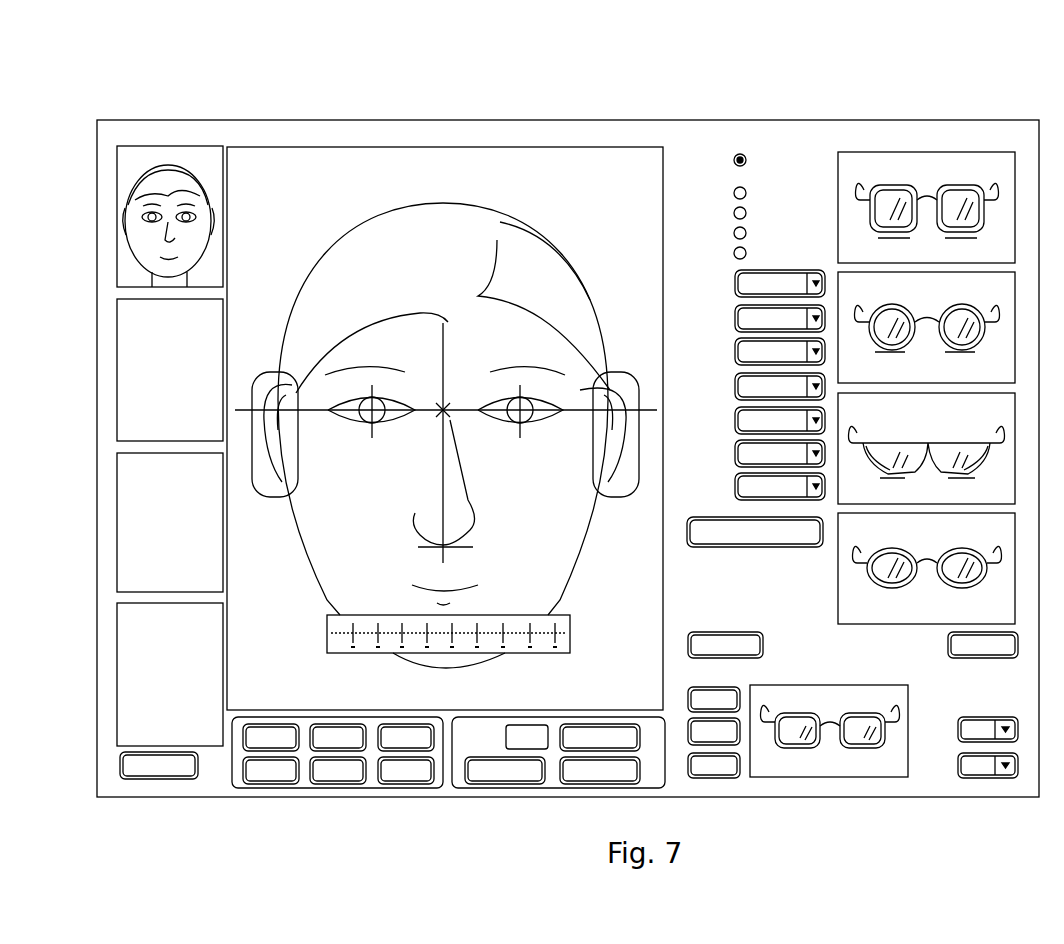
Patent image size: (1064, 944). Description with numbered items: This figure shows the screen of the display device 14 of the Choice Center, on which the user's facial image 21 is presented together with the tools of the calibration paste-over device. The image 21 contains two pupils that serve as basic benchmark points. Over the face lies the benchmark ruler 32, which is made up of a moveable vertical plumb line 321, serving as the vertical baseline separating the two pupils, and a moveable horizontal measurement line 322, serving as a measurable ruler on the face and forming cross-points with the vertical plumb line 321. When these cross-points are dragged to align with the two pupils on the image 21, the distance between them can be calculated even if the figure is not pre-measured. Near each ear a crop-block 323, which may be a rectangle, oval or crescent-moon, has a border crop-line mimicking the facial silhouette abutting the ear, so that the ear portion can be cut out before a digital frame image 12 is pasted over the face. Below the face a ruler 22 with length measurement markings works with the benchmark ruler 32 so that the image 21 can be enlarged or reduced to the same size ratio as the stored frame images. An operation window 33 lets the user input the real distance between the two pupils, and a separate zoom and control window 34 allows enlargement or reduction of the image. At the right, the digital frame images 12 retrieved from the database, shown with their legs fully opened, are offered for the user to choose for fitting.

The display device 14 is at (902, 119).
The digital frame image 12 is at (955, 185).
The user image 21 is at (366, 245).
The benchmark ruler 32 is at (449, 405).
The vertical plumb line 321 is at (443, 495).
The horizontal measurement line 322 is at (313, 410).
The crop-block 323 is at (632, 380).
The ruler 22 is at (548, 653).
The operation window 33 is at (517, 653).
The zoom and control window 34 is at (373, 653).